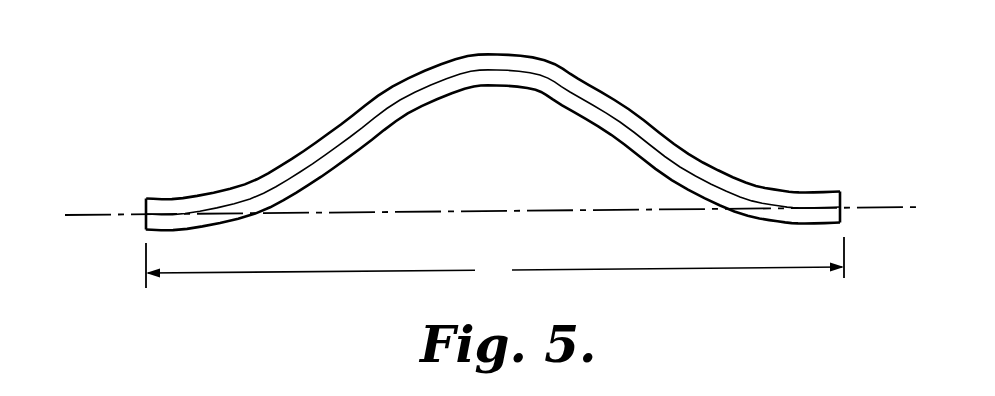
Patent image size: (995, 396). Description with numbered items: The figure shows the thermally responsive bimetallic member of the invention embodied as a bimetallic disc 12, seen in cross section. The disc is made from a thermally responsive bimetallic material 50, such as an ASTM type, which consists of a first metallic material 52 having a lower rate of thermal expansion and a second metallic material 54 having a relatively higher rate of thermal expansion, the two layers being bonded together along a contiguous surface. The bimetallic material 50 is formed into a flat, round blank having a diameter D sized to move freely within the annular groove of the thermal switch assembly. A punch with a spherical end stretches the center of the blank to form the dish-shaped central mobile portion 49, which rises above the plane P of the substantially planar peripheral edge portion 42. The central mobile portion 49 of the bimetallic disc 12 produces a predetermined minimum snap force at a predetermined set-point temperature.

The bimetallic disc 12 is at (493, 116).
The peripheral edge portion 42 is at (146, 197).
The central mobile portion 49 is at (348, 118).
The thermally responsive bimetallic material 50 is at (493, 116).
The first metallic material 52 is at (597, 90).
The second metallic material 54 is at (570, 109).
The plane of the peripheral hoop portion P is at (88, 213).
The diameter D is at (495, 262).